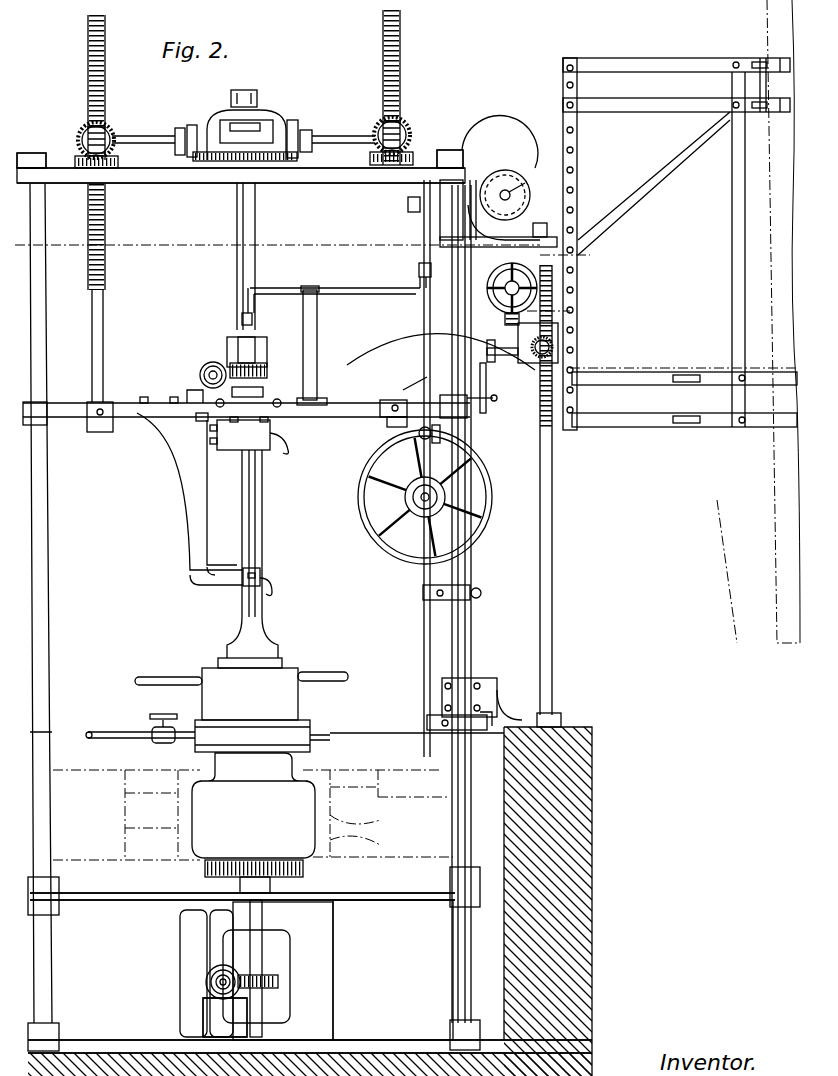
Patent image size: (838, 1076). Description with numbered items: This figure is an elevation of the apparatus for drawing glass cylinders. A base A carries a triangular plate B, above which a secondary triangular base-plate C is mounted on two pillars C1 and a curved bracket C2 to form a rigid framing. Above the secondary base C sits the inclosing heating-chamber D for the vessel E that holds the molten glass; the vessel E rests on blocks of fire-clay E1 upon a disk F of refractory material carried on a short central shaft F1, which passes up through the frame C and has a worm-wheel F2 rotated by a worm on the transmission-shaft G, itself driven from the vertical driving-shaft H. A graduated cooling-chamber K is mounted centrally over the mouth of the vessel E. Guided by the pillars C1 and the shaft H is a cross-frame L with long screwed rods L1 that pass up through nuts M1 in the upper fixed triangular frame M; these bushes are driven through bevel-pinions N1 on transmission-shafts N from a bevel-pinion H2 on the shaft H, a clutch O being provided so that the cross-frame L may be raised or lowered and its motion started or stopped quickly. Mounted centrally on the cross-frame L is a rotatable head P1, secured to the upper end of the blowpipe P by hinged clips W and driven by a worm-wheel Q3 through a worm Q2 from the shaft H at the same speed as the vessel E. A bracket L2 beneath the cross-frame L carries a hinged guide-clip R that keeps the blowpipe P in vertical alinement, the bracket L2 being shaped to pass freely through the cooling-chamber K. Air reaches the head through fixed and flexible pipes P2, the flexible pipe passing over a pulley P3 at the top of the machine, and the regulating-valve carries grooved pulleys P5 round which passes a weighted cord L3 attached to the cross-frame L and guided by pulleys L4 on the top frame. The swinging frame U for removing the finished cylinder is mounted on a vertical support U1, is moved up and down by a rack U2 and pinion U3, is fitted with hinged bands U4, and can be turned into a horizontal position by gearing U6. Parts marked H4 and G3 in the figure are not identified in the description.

The bevel-pinions N1 is at (112, 131).
The transmission-shafts N is at (313, 142).
The clutch O is at (247, 138).
The bevel-pinion H2 is at (290, 155).
The pulleys L4 is at (468, 110).
The pulley P3 is at (445, 182).
The nuts M1 is at (92, 183).
The upper fixed triangular frame M is at (148, 179).
The vertical driving-shaft H is at (243, 212).
The long screwed rods L1 is at (97, 280).
The rotatable head P1 is at (230, 347).
The worm-wheel Q3 is at (263, 365).
The worm Q2 is at (200, 377).
The fixed and flexible pipes P2 is at (335, 295).
The weighted cord L3 is at (362, 366).
The gearing U6 is at (548, 300).
The pinion U3 is at (547, 345).
The rack U2 is at (540, 396).
The vertical support U1 is at (548, 483).
The swinging frame U is at (627, 398).
The hinged bands U4 is at (780, 400).
The cross-frame L is at (107, 425).
The bracket L2 is at (190, 480).
The hinged clips W is at (238, 432).
The grooved pulleys P5 is at (382, 476).
The hinged guide-clip R is at (264, 573).
The blowpipe P is at (250, 600).
The graduated cooling-chamber K is at (213, 700).
The vessel E is at (233, 797).
The inclosing heating-chamber D is at (125, 793).
The disk F is at (210, 865).
The secondary triangular base-plate C is at (123, 900).
The blocks of fire-clay E1 is at (247, 878).
The pillars C1 is at (45, 927).
The short central shaft F1 is at (212, 908).
The worm-wheel F2 is at (262, 985).
The worm H4 is at (250, 952).
The curved bracket C2 is at (192, 975).
The bracket G3 is at (203, 992).
The transmission-shaft G is at (200, 990).
The triangular plate B is at (88, 1050).
The base A is at (112, 1065).